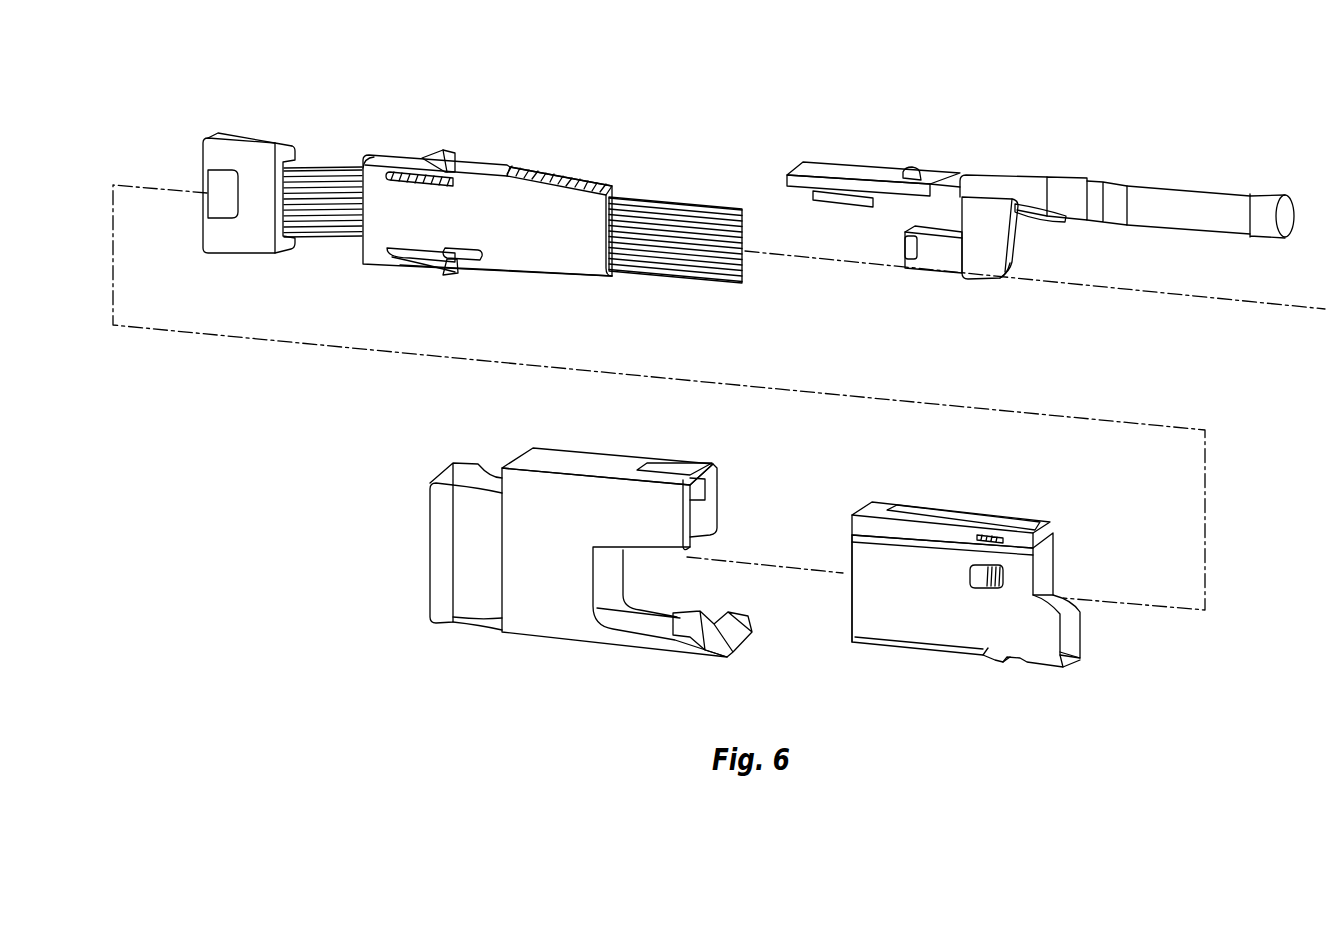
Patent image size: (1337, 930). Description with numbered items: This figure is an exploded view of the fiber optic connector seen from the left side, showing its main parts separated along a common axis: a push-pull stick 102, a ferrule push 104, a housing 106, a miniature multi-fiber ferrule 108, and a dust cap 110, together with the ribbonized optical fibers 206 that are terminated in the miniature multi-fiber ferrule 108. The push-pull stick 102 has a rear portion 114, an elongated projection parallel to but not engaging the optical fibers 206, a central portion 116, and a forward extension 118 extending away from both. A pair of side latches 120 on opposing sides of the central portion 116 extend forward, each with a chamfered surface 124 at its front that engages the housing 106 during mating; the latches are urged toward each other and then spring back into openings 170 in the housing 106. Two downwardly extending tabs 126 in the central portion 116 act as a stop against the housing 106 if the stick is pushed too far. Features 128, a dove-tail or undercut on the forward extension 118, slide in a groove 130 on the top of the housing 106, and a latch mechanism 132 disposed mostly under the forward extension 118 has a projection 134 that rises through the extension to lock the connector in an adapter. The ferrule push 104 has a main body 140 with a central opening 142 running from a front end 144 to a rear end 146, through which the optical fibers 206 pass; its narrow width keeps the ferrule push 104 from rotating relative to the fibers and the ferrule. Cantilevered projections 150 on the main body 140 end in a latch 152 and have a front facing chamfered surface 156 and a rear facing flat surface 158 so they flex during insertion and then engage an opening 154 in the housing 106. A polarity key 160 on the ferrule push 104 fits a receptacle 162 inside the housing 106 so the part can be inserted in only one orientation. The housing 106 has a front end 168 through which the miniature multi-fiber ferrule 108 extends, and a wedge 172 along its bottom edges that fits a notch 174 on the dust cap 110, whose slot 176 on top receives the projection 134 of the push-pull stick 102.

The push-pull stick 102 is at (1040, 209).
The ferrule push 104 is at (491, 204).
The housing 106 is at (933, 591).
The miniature multi-fiber ferrule 108 is at (262, 137).
The dust cap 110 is at (591, 557).
The rear portion 114 is at (1185, 193).
The central portion 116 is at (1013, 189).
The forward extension 118 is at (873, 170).
The side latches 120 is at (925, 276).
The chamfered surface 124 is at (906, 262).
The downwardly extending tabs 126 is at (983, 262).
The features 128 is at (835, 207).
The groove 130 is at (927, 512).
The latch mechanism 132 is at (1045, 224).
The projection 134 is at (912, 168).
The main body 140 is at (553, 262).
The central opening 142 is at (612, 270).
The front end 144 is at (364, 157).
The rear end 146 is at (613, 186).
The projection 150 is at (405, 172).
The latch 152 is at (452, 275).
The opening 154 is at (986, 658).
The front facing chamfered surface 156 is at (443, 150).
The rear facing flat surface 158 is at (455, 155).
The polarity key 160 is at (482, 253).
The receptacle 162 is at (1070, 665).
The front end 168 is at (852, 548).
The openings 170 is at (970, 577).
The wedge 172 is at (1012, 662).
The notch 174 is at (675, 648).
The slot 176 is at (680, 460).
The optical fibers 206 is at (330, 240).